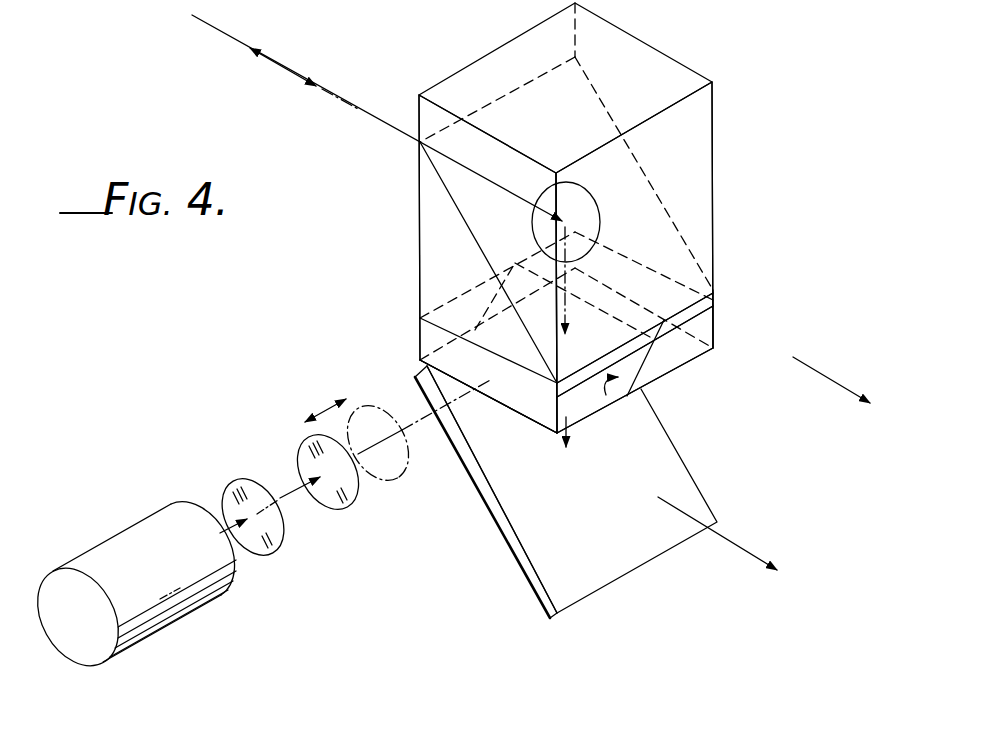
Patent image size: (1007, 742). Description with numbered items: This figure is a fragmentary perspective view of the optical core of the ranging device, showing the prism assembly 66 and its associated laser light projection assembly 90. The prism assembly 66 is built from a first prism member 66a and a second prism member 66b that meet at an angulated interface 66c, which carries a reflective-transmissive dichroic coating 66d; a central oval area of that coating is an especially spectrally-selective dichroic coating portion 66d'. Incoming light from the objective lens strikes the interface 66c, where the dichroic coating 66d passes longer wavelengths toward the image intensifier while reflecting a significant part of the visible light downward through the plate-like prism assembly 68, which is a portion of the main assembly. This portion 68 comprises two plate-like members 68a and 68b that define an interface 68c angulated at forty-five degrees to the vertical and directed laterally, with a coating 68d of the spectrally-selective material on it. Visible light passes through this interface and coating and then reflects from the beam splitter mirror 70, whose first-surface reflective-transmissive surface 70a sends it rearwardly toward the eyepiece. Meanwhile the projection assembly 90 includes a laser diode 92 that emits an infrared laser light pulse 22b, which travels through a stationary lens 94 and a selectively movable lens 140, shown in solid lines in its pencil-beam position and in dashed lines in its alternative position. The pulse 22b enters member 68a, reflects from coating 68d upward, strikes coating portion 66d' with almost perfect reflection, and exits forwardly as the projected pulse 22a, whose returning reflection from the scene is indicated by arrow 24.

The returning laser light 24 is at (247, 50).
The projected laser light pulse 22a is at (317, 80).
The prism assembly 66 is at (733, 70).
The first prism member 66a is at (705, 160).
The second prism member 66b is at (423, 221).
The angulated interface 66c is at (473, 236).
The dichroic coating 66d is at (536, 173).
The spectrally-selective dichroic coating portion 66d' is at (594, 222).
The plate-like prism assembly 68 is at (417, 337).
The plate-like member 68a is at (533, 415).
The plate-like member 68b is at (713, 327).
The interface 68c is at (650, 357).
The coating 68d is at (640, 393).
The beam splitter mirror 70 is at (501, 535).
The first-surface reflective-transmissive surface 70a is at (560, 557).
The laser light projection assembly 90 is at (256, 529).
The laser diode 92 is at (125, 527).
The stationary lens 94 is at (232, 487).
The laser light pulse 22b is at (228, 533).
The movable lens 140 is at (350, 503).